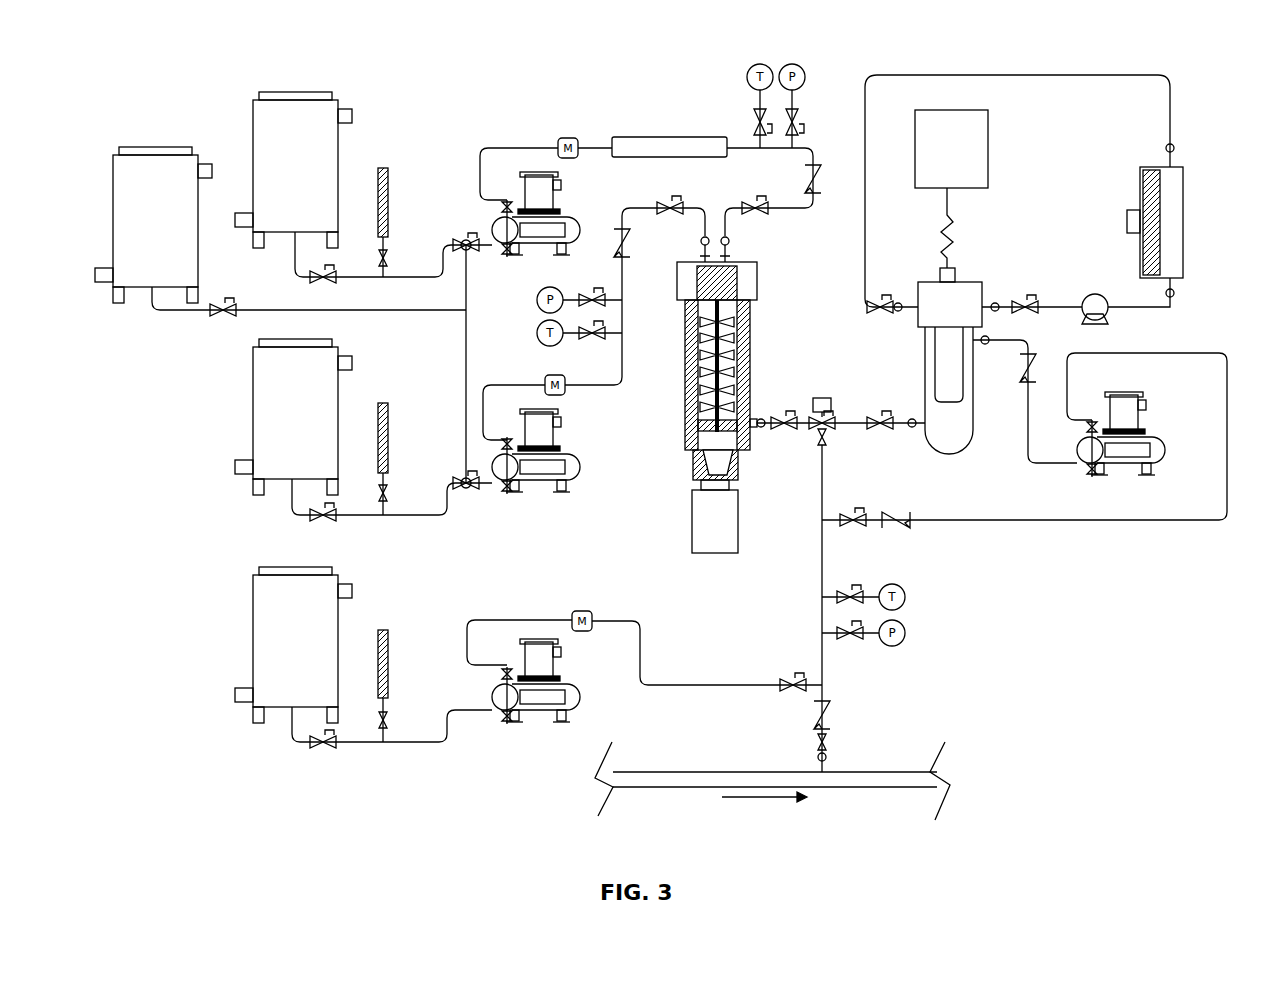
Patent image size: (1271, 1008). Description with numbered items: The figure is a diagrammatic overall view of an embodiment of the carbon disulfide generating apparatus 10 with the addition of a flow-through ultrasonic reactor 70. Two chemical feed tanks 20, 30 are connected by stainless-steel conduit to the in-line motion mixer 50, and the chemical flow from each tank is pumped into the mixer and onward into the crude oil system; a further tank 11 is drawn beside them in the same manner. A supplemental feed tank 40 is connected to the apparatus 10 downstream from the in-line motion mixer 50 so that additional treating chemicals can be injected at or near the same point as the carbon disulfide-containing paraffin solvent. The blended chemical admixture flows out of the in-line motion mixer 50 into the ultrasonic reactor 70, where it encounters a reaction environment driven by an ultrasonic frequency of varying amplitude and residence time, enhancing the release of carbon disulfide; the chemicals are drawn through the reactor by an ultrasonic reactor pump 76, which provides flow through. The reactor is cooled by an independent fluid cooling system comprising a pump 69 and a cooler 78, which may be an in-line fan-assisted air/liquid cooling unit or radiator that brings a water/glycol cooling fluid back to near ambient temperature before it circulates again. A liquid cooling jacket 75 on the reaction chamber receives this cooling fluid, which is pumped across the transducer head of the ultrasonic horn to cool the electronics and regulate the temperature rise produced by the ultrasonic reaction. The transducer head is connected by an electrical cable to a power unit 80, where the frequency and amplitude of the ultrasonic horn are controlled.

The carbon disulfide generating apparatus 10 is at (162, 503).
The solvent tank 11 is at (141, 236).
The chemical feed tank 20 is at (283, 175).
The chemical feed tank 30 is at (283, 426).
The supplemental feed tank 40 is at (283, 661).
The in-line motion mixer 50 is at (687, 390).
The pump 69 is at (1088, 298).
The ultrasonic reactor 70 is at (947, 382).
The liquid cooling jacket 75 is at (938, 318).
The ultrasonic reactor pump 76 is at (1122, 465).
The cooler 78 is at (1172, 225).
The power unit 80 is at (975, 108).